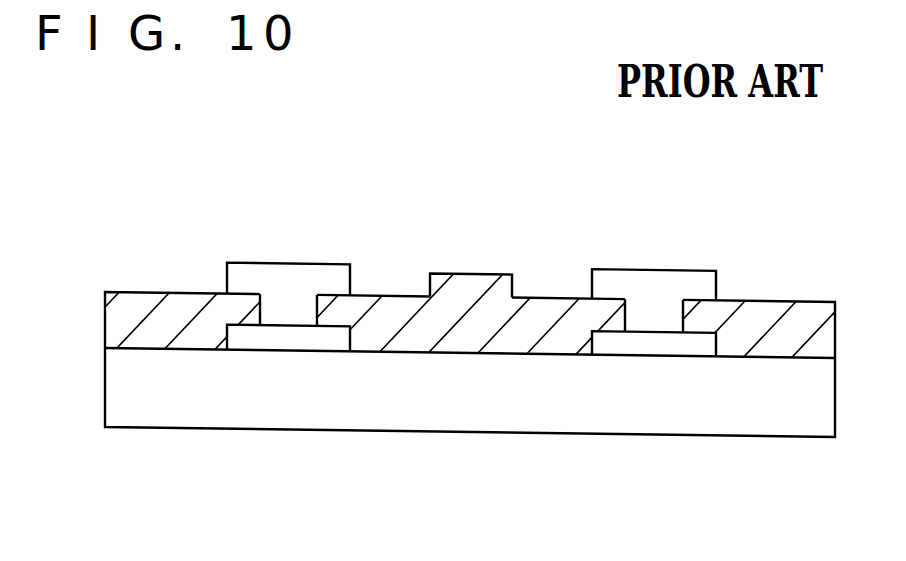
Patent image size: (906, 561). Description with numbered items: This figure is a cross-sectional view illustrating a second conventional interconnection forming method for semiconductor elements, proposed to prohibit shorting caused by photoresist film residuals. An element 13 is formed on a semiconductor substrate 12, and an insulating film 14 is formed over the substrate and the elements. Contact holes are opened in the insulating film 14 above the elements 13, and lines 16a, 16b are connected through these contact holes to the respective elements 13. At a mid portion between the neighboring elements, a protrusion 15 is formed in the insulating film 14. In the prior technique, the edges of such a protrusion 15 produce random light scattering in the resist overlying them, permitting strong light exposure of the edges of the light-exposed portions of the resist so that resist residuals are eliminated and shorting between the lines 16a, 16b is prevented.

The semiconductor substrate 12 is at (487, 409).
The element 13 is at (290, 340).
The insulating film 14 is at (805, 313).
The protrusion 15 is at (475, 275).
The line 16a is at (648, 282).
The line 16b is at (289, 280).